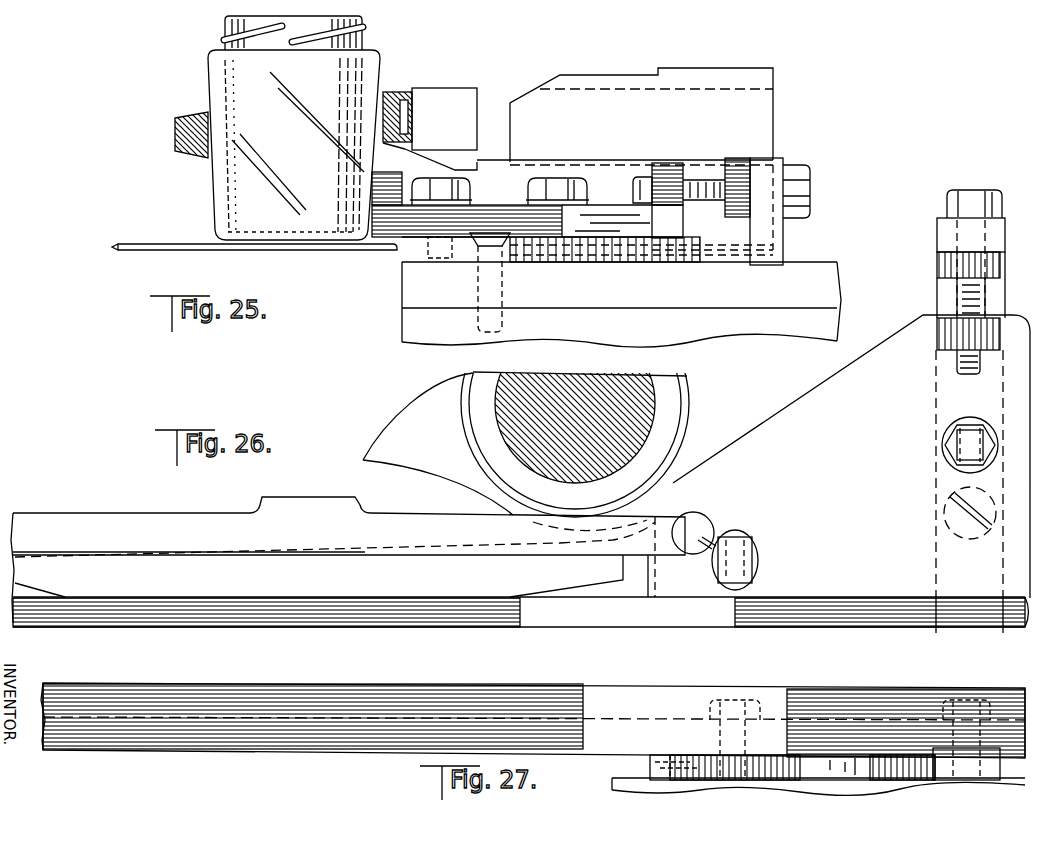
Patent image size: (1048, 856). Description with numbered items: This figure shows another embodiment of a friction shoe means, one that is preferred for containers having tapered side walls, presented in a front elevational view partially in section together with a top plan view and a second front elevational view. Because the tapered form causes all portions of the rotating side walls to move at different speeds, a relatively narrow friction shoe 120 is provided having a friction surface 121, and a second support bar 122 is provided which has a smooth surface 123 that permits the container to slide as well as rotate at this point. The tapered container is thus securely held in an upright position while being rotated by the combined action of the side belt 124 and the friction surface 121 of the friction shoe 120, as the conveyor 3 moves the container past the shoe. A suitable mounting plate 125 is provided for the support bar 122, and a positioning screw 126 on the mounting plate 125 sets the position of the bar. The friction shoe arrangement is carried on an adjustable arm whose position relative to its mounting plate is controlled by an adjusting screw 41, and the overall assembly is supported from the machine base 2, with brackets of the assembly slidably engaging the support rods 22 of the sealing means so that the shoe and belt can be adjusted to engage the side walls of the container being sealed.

In FIG. 27, the machine base 2 is at (612, 784).
In FIG. 25, the conveyor 3 is at (174, 242).
In FIG. 26, the support rods 22 is at (655, 392).
In FIG. 25, the adjusting screw 41 is at (220, 75).
In FIG. 25, the friction shoe 120 is at (442, 94).
In FIG. 26, the friction shoe 120 is at (438, 525).
In FIG. 25, the friction surface 121 is at (390, 95).
In FIG. 26, the friction surface 121 is at (357, 583).
In FIG. 25, the second support bar 122 is at (386, 244).
In FIG. 26, the second support bar 122 is at (644, 612).
In FIG. 27, the second support bar 122 is at (806, 698).
In FIG. 25, the smooth surface 123 is at (372, 190).
In FIG. 26, the smooth surface 123 is at (724, 620).
In FIG. 27, the smooth surface 123 is at (434, 690).
In FIG. 25, the side belt 124 is at (175, 127).
In FIG. 26, the mounting plate 125 is at (832, 387).
In FIG. 27, the mounting plate 125 is at (660, 765).
In FIG. 26, the positioning screw 126 is at (958, 296).